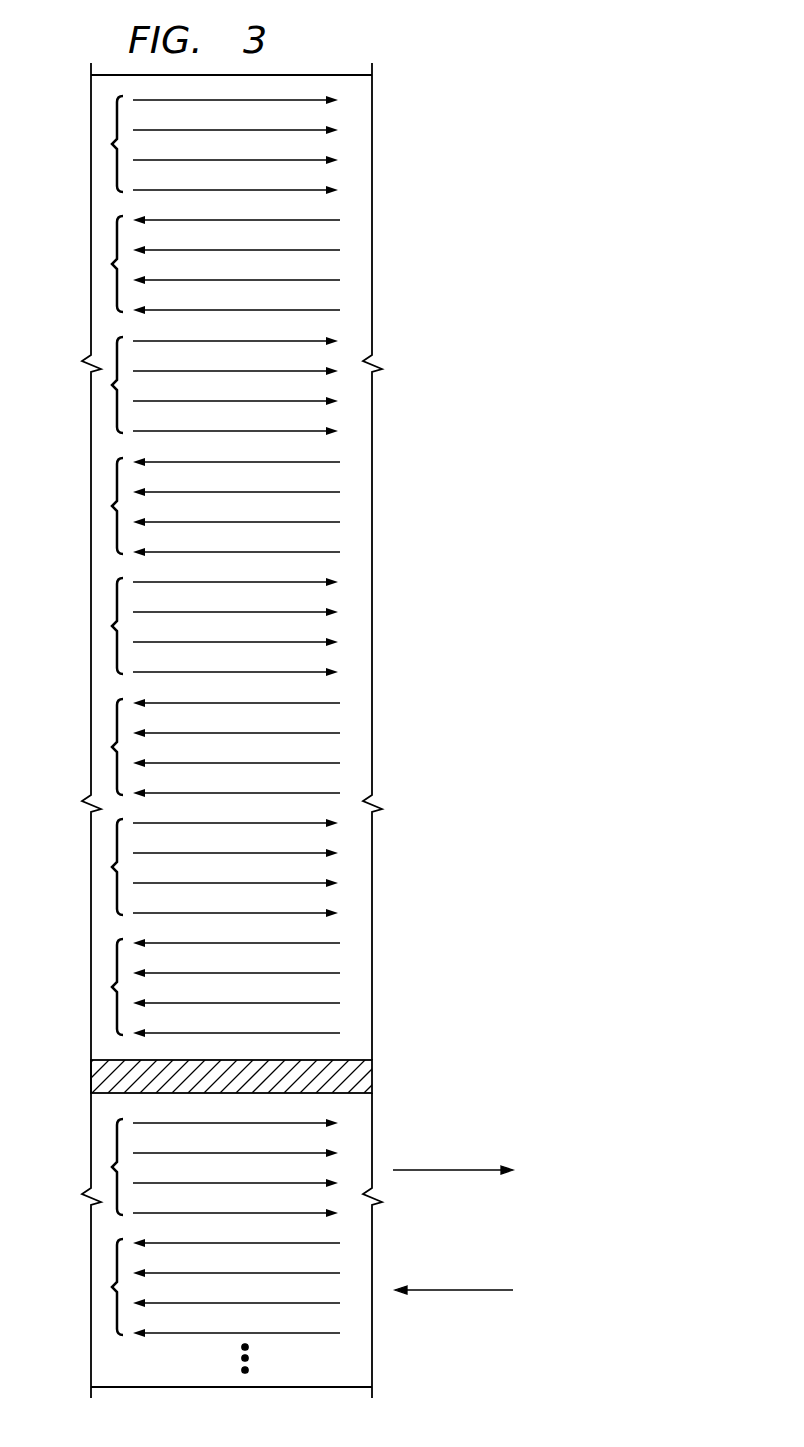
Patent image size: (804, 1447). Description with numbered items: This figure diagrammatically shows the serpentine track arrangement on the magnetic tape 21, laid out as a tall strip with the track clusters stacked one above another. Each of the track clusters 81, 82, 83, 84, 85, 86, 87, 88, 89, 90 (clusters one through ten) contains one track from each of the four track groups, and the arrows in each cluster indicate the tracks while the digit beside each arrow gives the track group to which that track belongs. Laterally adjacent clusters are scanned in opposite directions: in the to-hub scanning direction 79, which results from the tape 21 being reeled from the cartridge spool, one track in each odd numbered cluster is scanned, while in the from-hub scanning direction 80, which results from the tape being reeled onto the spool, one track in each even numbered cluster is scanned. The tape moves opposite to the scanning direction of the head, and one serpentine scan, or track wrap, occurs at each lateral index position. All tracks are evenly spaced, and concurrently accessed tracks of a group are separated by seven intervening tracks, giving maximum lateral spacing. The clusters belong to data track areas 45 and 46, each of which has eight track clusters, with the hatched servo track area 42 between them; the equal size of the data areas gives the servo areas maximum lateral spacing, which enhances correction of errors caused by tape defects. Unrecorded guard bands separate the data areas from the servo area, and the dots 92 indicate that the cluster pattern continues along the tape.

The magnetic tape 21 is at (306, 75).
The servo track area 42 is at (100, 1077).
The data track area 45 is at (368, 511).
The data track area 46 is at (366, 1366).
The to hub scanning direction 79 is at (473, 1172).
The from hub scanning direction 80 is at (473, 1292).
The track cluster 81 is at (112, 144).
The track cluster 82 is at (112, 264).
The track cluster 83 is at (112, 385).
The track cluster 84 is at (112, 506).
The track cluster 85 is at (112, 626).
The track cluster 86 is at (112, 747).
The track cluster 87 is at (112, 867).
The track cluster 88 is at (112, 987).
The track cluster 89 is at (112, 1167).
The track cluster 90 is at (112, 1287).
The continuation dots 92 is at (250, 1358).